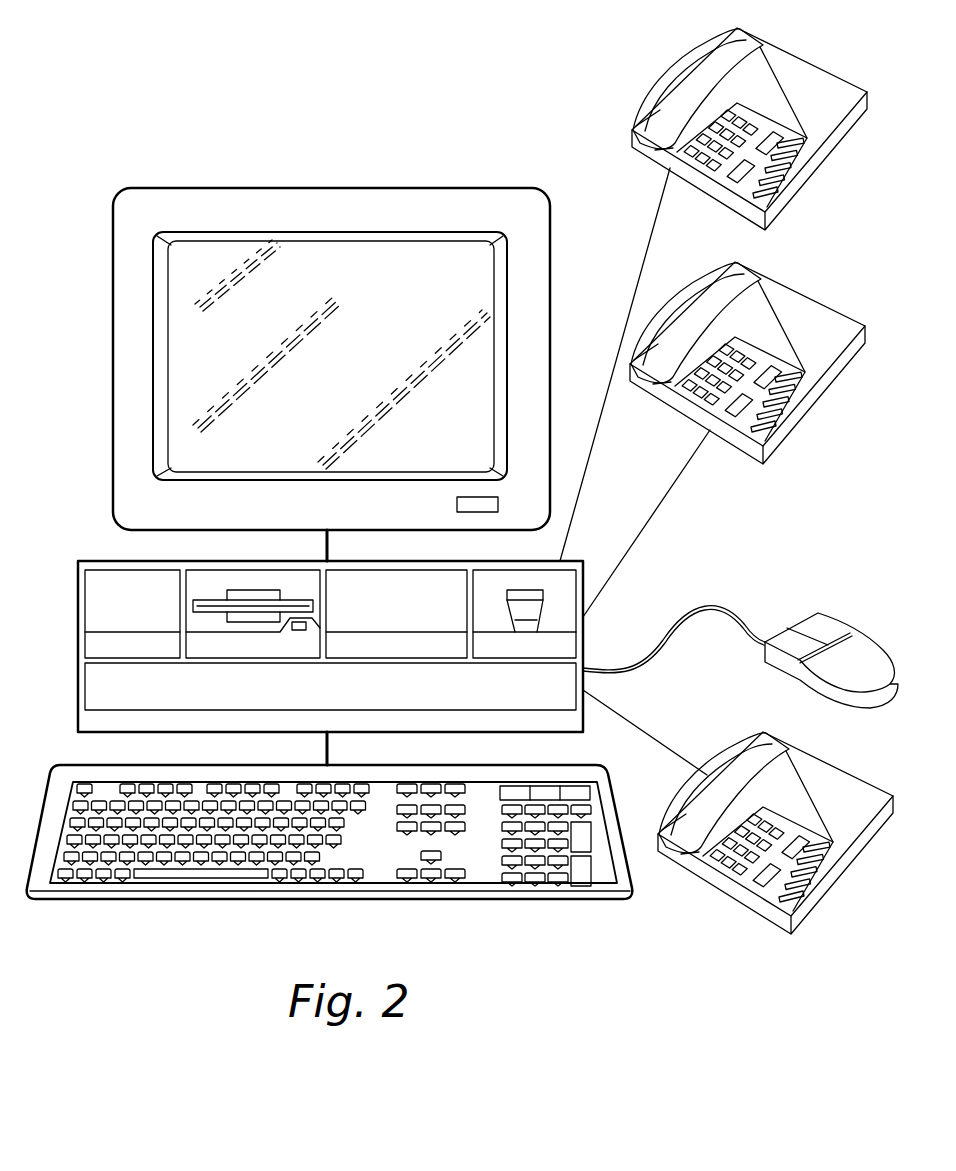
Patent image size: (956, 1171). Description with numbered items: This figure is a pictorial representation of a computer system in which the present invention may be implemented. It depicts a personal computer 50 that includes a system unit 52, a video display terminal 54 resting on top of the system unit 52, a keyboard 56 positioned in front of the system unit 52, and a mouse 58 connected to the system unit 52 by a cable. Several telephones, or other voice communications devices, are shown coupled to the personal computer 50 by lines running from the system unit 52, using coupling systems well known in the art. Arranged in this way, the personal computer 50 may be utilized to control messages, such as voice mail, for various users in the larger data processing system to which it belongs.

The personal computer 50 is at (590, 512).
The system unit 52 is at (78, 602).
The video display terminal 54 is at (450, 188).
The keyboard 56 is at (518, 895).
The mouse 58 is at (808, 617).